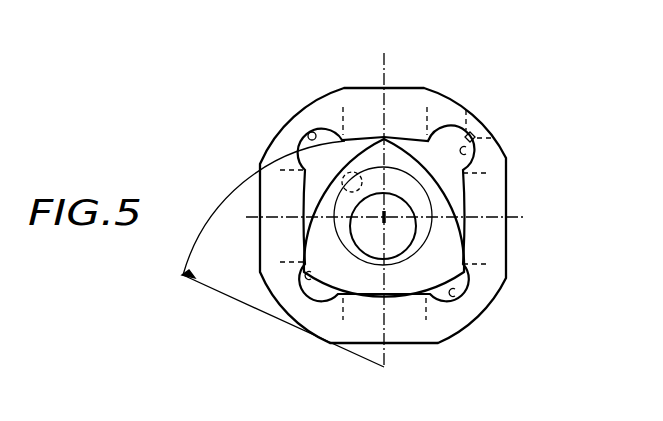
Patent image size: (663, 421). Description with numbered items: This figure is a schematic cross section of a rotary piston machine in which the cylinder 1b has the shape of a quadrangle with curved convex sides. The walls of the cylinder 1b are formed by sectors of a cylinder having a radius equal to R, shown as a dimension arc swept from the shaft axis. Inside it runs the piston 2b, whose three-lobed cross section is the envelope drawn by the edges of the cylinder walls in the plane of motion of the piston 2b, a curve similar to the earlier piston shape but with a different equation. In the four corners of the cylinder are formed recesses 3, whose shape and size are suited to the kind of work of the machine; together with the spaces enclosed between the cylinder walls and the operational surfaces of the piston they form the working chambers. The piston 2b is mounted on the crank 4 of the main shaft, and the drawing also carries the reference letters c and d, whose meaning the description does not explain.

The cylinder 1b is at (497, 200).
The piston 2b is at (402, 283).
The recesses 3 is at (311, 134).
The crank 4 is at (384, 217).
The rotor center / dashed reference circle c is at (350, 205).
The eccentric circle d is at (418, 234).
The radius R is at (283, 254).